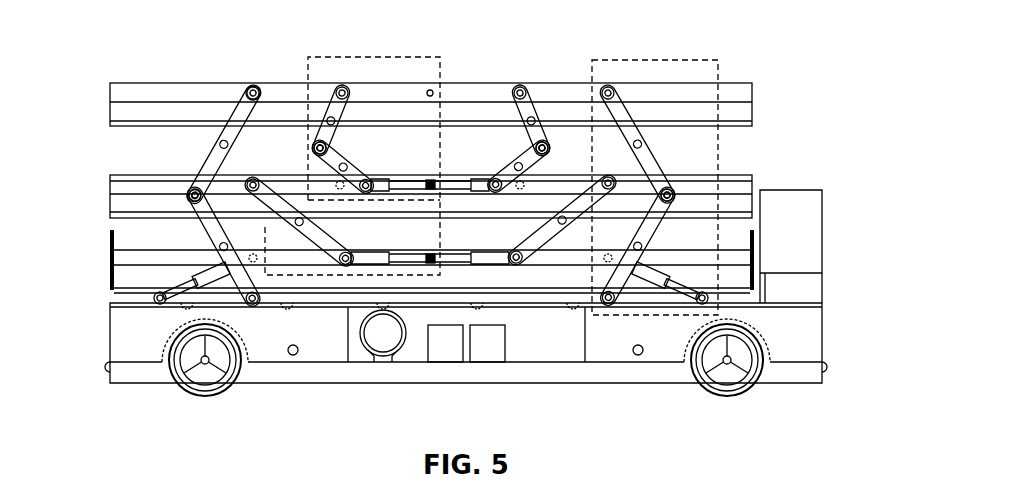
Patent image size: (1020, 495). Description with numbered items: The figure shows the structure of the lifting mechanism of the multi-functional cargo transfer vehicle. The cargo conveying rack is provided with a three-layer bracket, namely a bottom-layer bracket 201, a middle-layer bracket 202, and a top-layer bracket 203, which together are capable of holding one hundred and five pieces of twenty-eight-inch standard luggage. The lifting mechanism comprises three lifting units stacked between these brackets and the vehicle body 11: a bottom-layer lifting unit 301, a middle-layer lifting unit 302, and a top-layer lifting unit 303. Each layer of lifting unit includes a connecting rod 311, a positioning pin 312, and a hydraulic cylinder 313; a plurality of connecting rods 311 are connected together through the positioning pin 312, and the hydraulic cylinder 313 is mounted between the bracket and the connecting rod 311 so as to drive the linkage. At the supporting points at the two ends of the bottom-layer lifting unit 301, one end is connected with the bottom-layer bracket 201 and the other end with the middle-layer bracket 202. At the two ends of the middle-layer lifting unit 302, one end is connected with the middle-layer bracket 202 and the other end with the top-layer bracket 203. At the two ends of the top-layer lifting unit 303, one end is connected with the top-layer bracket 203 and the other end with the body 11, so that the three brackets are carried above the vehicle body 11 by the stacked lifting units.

The body 11 is at (797, 343).
The bottom-layer bracket 201 is at (740, 260).
The middle-layer bracket 202 is at (742, 188).
The top-layer bracket 203 is at (742, 97).
The bottom-layer lifting unit 301 is at (282, 237).
The middle-layer lifting unit 302 is at (383, 72).
The top-layer lifting unit 303 is at (663, 75).
The connecting rod 311 is at (212, 158).
The positioning pin 312 is at (245, 83).
The hydraulic cylinder 313 is at (160, 297).